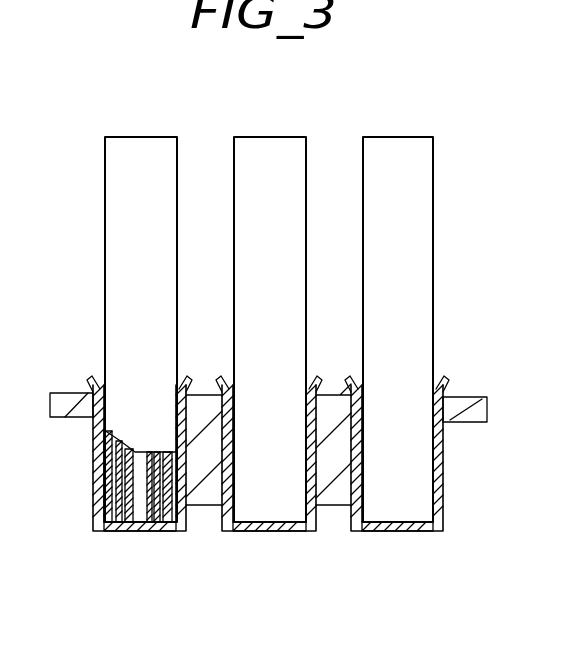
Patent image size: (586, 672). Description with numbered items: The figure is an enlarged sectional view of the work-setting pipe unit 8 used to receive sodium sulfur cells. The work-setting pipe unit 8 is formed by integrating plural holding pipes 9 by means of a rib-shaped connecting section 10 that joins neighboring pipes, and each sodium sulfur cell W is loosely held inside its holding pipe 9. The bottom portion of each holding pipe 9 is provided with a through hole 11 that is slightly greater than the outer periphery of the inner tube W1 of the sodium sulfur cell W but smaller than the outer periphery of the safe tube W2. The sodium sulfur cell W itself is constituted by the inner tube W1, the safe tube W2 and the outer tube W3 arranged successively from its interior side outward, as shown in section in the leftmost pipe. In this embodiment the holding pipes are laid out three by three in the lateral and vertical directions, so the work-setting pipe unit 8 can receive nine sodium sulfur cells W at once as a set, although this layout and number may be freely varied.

The sodium sulfur cell W is at (153, 157).
The inner tube W1 is at (130, 522).
The safe tube W2 is at (118, 522).
The outer tube W3 is at (102, 522).
The work-setting pipe unit 8 is at (463, 400).
The holding pipe 9 is at (92, 468).
The rib-shaped connecting section 10 is at (207, 492).
The through hole 11 is at (267, 523).